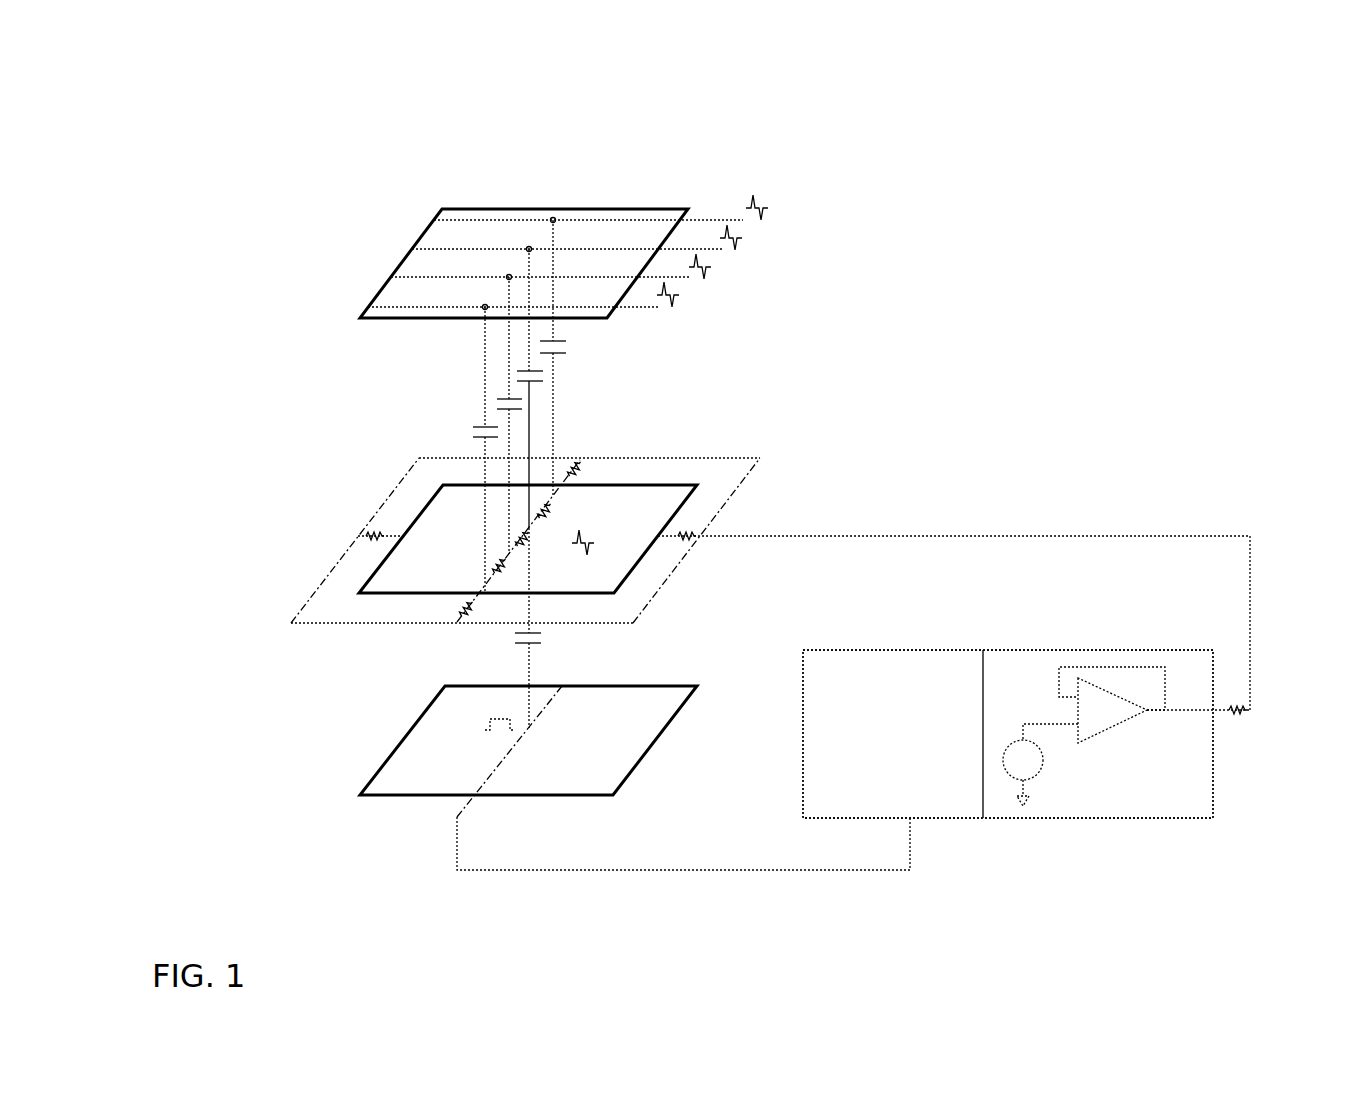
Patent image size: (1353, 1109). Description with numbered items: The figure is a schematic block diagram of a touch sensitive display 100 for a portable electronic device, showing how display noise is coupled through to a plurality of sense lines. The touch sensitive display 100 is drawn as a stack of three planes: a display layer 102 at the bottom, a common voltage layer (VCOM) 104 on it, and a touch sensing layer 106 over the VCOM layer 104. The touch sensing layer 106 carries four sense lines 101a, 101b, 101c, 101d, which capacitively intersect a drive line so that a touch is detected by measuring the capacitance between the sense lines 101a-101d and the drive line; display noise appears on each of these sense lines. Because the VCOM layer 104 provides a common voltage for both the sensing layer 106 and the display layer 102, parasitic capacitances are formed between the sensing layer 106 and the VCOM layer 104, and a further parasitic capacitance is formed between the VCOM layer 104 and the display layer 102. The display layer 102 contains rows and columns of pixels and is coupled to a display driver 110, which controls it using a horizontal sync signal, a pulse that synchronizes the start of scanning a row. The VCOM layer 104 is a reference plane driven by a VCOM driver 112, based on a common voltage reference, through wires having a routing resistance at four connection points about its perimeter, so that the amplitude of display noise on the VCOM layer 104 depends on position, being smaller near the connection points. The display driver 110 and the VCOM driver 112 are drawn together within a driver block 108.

The touch sensitive display 100 is at (789, 110).
The display layer 102 is at (402, 733).
The common voltage layer (VCOM) 104 is at (418, 597).
The touch sensing layer 106 is at (495, 189).
The sense line 101a is at (368, 307).
The sense line 101b is at (391, 277).
The sense line 101c is at (412, 249).
The sense line 101d is at (434, 220).
The driver circuitry 108 is at (1003, 627).
The display driver 110 is at (840, 819).
The VCOM driver 112 is at (1036, 819).